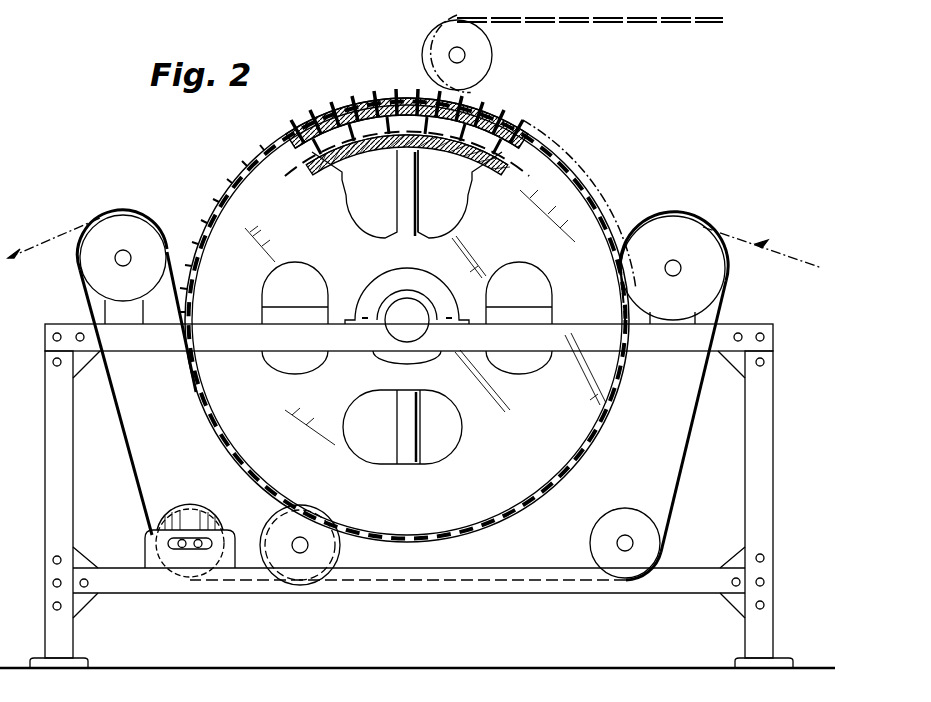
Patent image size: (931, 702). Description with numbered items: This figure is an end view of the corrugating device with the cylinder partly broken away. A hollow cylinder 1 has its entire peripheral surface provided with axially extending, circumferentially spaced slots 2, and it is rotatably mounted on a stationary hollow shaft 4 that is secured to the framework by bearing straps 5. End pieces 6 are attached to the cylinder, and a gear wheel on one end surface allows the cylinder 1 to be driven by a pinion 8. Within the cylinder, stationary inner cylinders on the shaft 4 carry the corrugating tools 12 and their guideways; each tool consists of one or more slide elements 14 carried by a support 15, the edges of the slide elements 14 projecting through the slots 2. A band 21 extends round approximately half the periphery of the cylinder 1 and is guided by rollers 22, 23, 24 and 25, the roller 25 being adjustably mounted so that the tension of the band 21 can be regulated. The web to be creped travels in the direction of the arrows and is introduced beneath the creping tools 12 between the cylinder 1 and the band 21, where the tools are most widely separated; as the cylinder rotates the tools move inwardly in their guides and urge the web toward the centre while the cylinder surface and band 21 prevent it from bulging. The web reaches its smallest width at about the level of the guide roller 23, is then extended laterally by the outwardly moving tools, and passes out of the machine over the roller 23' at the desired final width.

The hollow cylinder 1 is at (505, 132).
The slots 2 is at (305, 132).
The stationary hollow shaft 4 is at (400, 322).
The bearing straps 5 is at (392, 300).
The end pieces 6 is at (572, 186).
The pinion 8 is at (297, 556).
The corrugating tools 12 is at (373, 150).
The slide elements 14 is at (344, 104).
The support 15 is at (455, 146).
The band 21 is at (222, 448).
The roller 22 is at (95, 262).
The guide roller 23 is at (697, 382).
The roller 23' is at (572, 151).
The roller 24 is at (615, 520).
The roller 25 is at (190, 520).